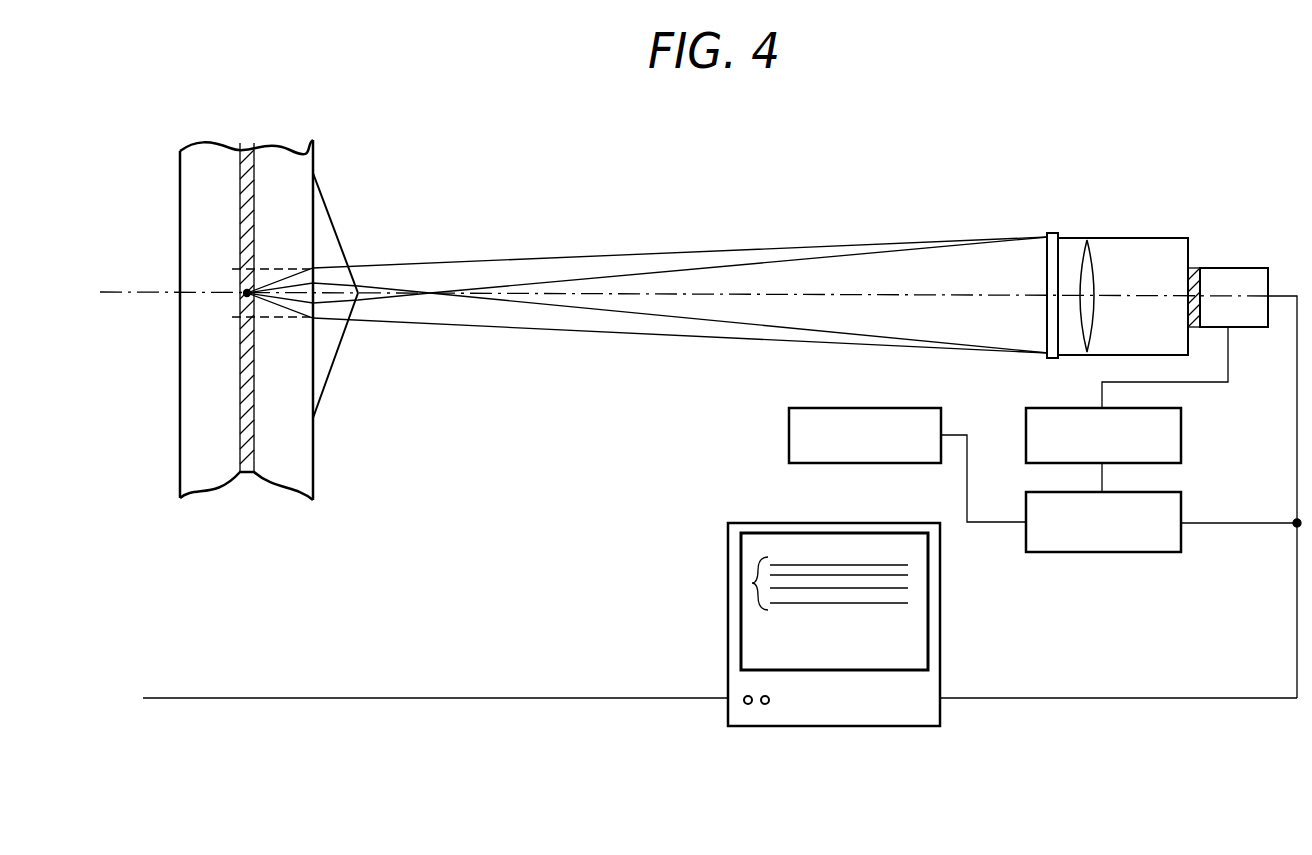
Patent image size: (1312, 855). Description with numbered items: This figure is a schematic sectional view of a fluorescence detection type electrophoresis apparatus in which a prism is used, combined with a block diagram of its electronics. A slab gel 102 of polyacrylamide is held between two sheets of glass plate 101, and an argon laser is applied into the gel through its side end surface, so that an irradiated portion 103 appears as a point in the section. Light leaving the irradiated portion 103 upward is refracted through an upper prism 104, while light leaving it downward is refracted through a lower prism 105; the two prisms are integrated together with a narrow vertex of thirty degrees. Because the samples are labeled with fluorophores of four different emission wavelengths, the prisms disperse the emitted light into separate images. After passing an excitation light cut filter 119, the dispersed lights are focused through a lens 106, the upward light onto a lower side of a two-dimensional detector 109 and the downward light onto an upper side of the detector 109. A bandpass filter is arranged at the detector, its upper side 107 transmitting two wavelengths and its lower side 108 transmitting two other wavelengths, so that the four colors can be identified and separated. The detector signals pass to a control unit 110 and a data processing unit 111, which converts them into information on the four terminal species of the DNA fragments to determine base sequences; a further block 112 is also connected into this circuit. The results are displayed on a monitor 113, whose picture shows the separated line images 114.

The glass plate 101 is at (297, 150).
The slab gel 102 is at (243, 147).
The irradiated portion 103 is at (240, 291).
The upper prism 104 is at (332, 225).
The lower prism 105 is at (336, 357).
The lens 106 is at (1090, 262).
The upper side of bandpass filter 107 is at (1196, 268).
The lower side of bandpass filter 108 is at (1192, 332).
The two-dimensional detector 109 is at (1256, 268).
The control unit 110 is at (1183, 432).
The data processing unit 111 is at (1183, 502).
The memory unit 112 is at (918, 408).
The monitor 113 is at (748, 680).
The line images 114 is at (752, 583).
The excitation light cut filter 119 is at (1050, 233).